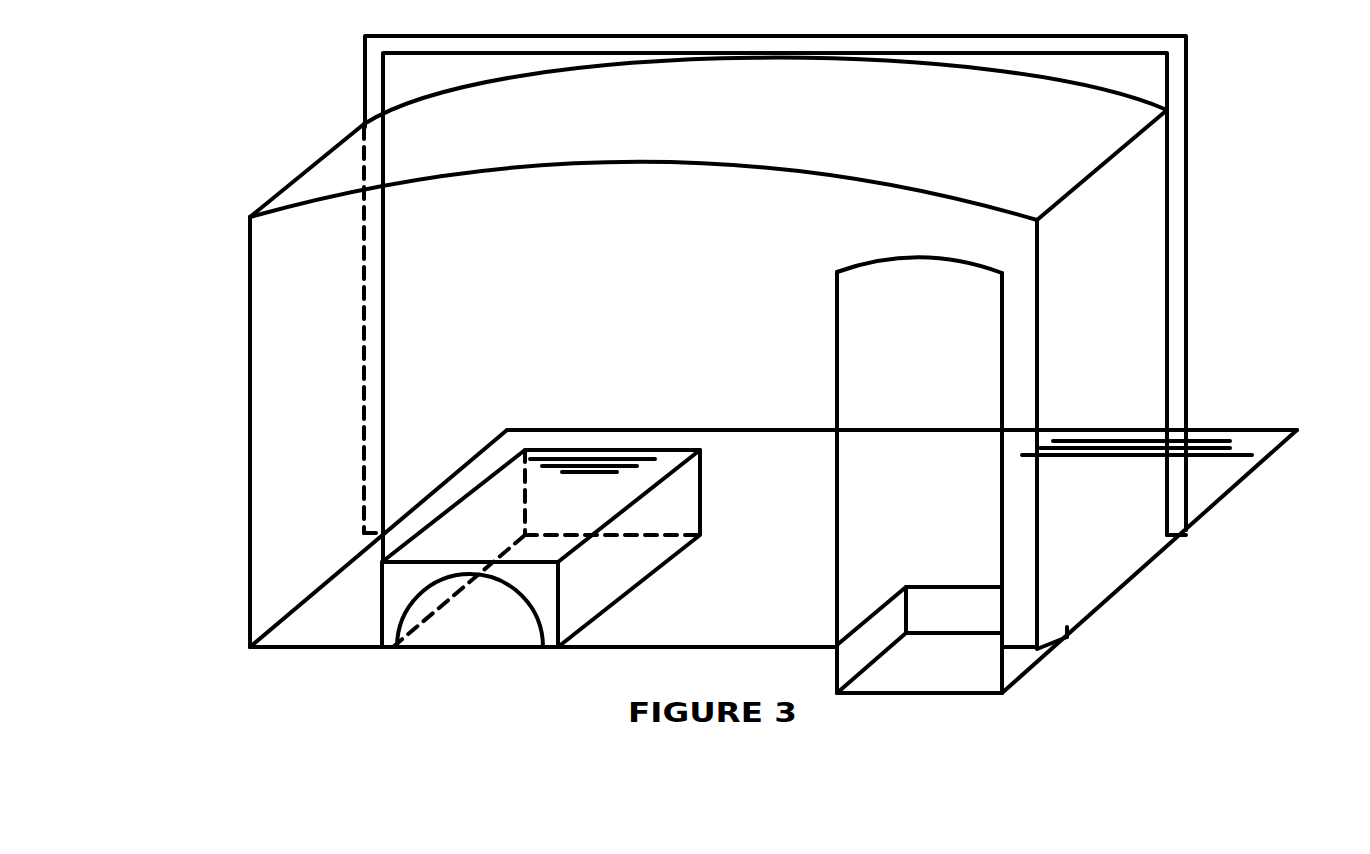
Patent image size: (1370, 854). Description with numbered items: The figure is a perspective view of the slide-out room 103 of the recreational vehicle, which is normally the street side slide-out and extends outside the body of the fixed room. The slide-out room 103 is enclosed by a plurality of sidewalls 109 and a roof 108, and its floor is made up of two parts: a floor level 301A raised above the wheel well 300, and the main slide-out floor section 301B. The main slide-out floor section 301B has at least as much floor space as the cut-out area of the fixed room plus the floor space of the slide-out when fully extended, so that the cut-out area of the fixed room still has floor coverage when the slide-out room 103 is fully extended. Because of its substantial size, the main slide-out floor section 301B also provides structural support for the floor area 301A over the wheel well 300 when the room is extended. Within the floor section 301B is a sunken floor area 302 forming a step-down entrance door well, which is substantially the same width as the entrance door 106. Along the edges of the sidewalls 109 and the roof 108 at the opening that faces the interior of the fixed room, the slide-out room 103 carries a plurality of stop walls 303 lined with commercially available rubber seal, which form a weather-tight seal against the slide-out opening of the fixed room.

The slide-out room 103 is at (263, 168).
The entrance door 106 is at (837, 338).
The roof 108 is at (840, 145).
The sidewalls 109 is at (1133, 272).
The wheel well 300 is at (425, 545).
The floor level above the wheel well 301A is at (582, 458).
The main slide-out floor section 301B is at (1197, 447).
The sunken floor area 302 is at (1015, 668).
The stop walls 303 is at (1180, 153).